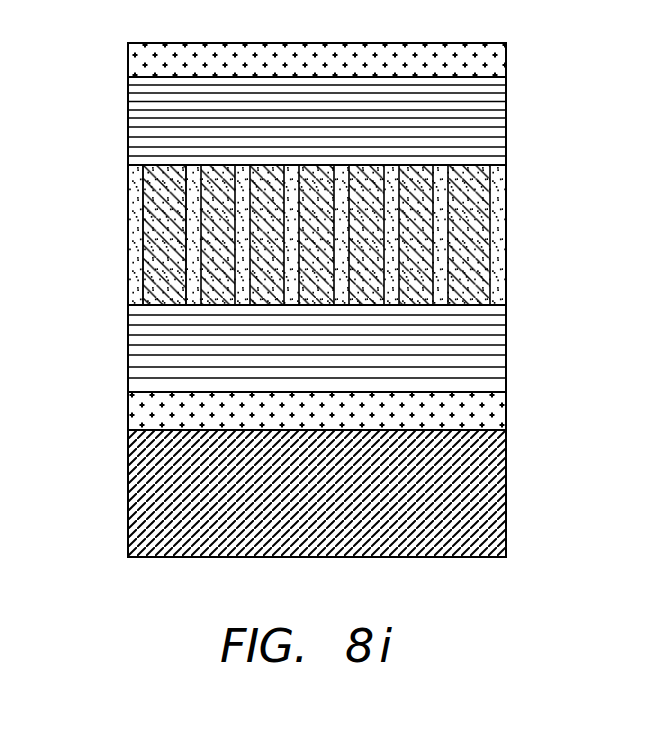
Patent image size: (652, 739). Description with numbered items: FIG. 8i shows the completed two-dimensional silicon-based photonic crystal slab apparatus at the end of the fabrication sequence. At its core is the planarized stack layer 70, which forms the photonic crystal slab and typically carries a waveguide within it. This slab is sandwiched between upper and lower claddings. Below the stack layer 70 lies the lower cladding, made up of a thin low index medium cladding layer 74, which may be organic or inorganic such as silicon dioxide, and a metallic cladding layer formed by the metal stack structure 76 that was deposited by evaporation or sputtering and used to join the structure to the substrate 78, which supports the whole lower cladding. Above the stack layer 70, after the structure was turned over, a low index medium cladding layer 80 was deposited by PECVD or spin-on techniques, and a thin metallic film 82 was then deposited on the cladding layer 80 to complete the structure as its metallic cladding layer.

The planarized stack layer 70 is at (560, 250).
The cladding layer 74 is at (507, 348).
The metal stack structure 76 is at (507, 408).
The substrate 78 is at (507, 473).
The cladding layer 80 is at (507, 130).
The metallic film 82 is at (507, 65).